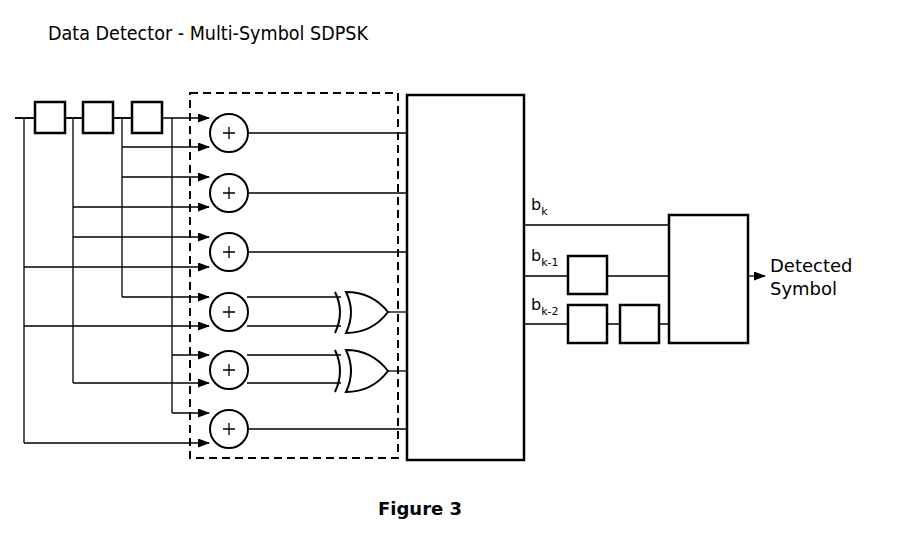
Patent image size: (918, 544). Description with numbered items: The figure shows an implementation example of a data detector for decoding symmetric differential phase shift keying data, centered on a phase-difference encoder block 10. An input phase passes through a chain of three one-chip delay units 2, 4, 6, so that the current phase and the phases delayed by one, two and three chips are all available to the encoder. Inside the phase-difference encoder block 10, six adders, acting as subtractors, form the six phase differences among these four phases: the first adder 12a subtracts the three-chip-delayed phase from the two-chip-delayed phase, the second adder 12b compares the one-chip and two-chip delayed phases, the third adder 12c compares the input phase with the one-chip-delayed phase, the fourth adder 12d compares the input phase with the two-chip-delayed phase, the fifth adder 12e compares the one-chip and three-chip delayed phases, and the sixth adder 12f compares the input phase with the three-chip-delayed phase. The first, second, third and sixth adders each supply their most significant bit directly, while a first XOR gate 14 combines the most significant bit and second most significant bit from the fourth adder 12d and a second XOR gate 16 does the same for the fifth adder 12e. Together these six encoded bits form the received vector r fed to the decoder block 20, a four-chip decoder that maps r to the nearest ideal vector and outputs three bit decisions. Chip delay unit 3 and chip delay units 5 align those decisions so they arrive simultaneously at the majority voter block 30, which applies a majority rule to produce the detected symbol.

The one-chip delay unit 2 is at (57, 102).
The one-chip delay unit 4 is at (105, 102).
The one-chip delay unit 6 is at (155, 102).
The phase-difference encoder block 10 is at (313, 93).
The first adder 12a is at (246, 146).
The second adder 12b is at (246, 206).
The third adder 12c is at (246, 265).
The fourth adder 12d is at (233, 331).
The fifth adder 12e is at (240, 387).
The sixth adder 12f is at (243, 443).
The first XOR gate 14 is at (352, 291).
The second XOR gate 16 is at (356, 352).
The decoder block 20 is at (432, 95).
The chip delay unit 3 is at (580, 256).
The chip delay units 5 is at (596, 343).
The majority voter block 30 is at (707, 215).